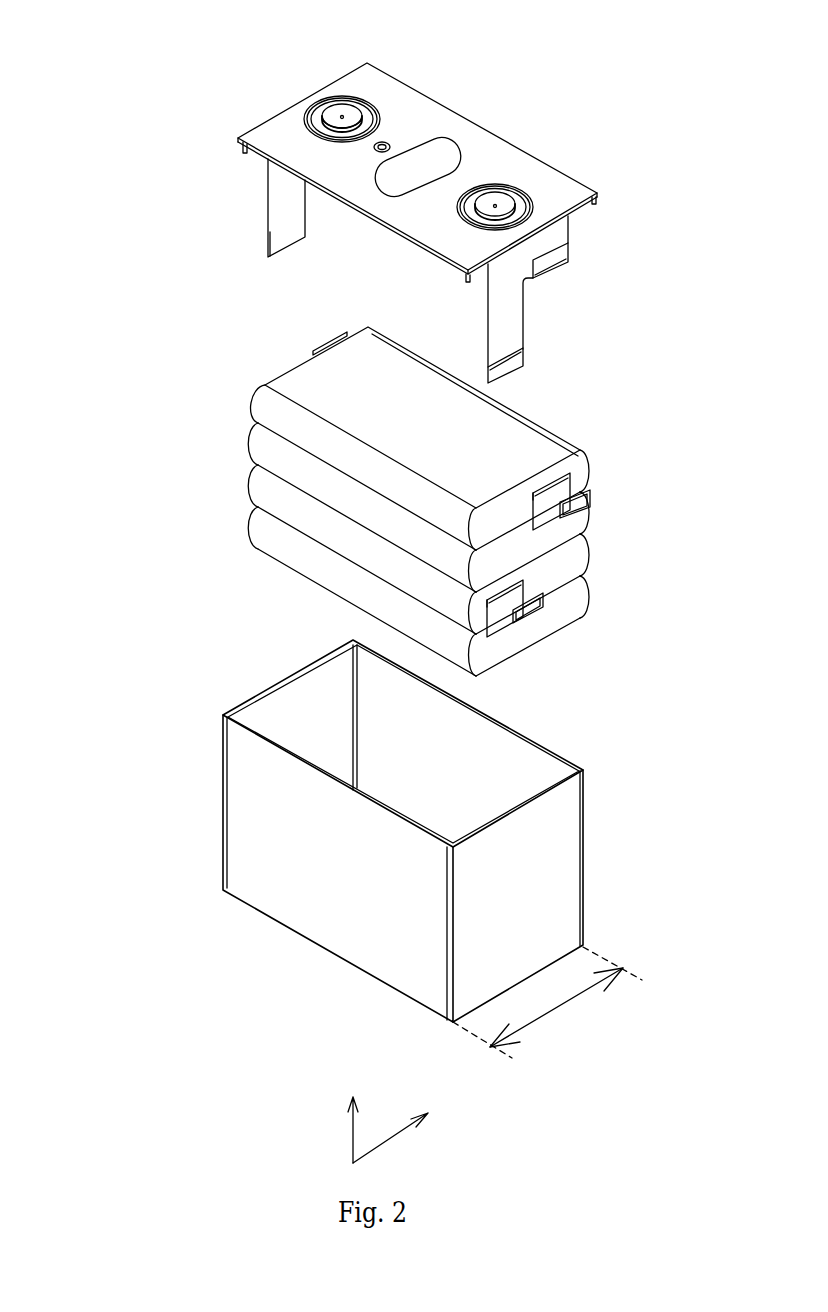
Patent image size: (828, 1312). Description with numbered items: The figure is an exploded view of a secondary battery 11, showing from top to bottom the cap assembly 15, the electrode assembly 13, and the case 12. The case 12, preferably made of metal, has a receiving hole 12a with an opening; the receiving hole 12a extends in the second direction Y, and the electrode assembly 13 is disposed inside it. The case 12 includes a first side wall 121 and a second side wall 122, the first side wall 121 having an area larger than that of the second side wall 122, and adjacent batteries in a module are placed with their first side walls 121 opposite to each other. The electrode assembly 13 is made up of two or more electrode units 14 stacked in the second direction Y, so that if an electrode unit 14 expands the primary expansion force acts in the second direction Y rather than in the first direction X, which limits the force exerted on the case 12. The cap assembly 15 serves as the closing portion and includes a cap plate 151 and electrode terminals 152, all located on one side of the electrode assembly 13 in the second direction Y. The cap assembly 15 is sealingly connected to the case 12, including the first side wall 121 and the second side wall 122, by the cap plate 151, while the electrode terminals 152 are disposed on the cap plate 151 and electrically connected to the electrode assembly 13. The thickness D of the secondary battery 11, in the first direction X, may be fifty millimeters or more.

The secondary battery 11 is at (458, 30).
The case 12 is at (165, 731).
The receiving hole 12a is at (470, 763).
The first side wall 121 is at (348, 888).
The second side wall 122 is at (518, 912).
The electrode assembly 13 is at (180, 450).
The electrode unit 14 is at (302, 425).
The cap assembly 15 is at (217, 353).
The cap plate 151 is at (392, 205).
The electrode terminal 152 is at (342, 117).